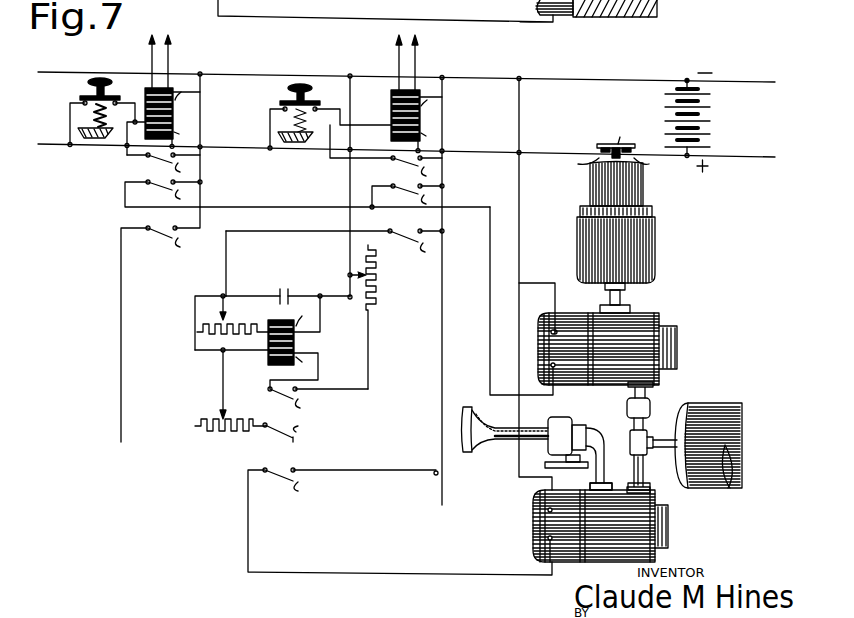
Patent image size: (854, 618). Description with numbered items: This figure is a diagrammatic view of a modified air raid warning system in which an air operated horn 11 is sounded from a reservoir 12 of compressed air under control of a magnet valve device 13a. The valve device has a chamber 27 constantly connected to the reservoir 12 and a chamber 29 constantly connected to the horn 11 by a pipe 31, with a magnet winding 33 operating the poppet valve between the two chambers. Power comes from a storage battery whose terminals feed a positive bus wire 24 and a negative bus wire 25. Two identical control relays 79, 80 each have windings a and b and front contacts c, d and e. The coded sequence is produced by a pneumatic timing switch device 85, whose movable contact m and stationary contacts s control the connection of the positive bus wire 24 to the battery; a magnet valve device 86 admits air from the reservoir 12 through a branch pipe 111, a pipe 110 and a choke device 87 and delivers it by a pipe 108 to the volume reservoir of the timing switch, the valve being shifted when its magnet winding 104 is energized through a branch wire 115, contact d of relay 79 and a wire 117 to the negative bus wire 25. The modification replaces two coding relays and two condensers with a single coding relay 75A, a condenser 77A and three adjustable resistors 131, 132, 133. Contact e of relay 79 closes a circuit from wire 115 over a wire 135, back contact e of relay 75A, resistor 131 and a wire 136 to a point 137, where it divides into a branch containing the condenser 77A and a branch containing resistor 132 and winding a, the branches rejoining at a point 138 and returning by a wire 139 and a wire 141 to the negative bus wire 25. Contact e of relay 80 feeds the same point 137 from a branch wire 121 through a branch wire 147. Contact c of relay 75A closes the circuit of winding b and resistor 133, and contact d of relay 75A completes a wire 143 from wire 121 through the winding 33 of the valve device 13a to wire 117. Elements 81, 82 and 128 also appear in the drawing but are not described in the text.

The horn 11 is at (462, 432).
The reservoir 12 is at (693, 403).
The magnet valve device 13a is at (530, 520).
The positive bus wire 24 is at (207, 147).
The negative bus wire 25 is at (205, 74).
The chamber 27 is at (657, 17).
The chamber 29 is at (602, 17).
The pipe 31 is at (600, 478).
The magnet winding 33 is at (536, 539).
The coding relay 75A is at (279, 313).
The electrical condenser 77A is at (287, 290).
The control relay 79 is at (146, 100).
The control relay 80 is at (390, 110).
The pressure switch 81 is at (86, 84).
The pressure switch 82 is at (284, 90).
The pneumatic timing switch device 85 is at (588, 187).
The magnet valve device 86 is at (533, 330).
The choke device 87 is at (622, 396).
The magnet winding 104 is at (545, 343).
The pipe 108 is at (622, 298).
The pipe 110 is at (640, 468).
The branch pipe 111 is at (657, 436).
The branch wire 115 is at (200, 180).
The wire 117 is at (519, 115).
The branch wire 121 is at (442, 185).
The conductor 128 is at (378, 18).
The adjustable resistor 131 is at (207, 412).
The adjustable resistor 132 is at (215, 340).
The adjustable resistor 133 is at (374, 286).
The wire 135 is at (121, 275).
The wire 136 is at (196, 320).
The point 137 is at (226, 294).
The point 138 is at (320, 294).
The wire 139 is at (333, 297).
The wire 141 is at (350, 180).
The wire 143 is at (408, 472).
The branch wire 147 is at (288, 240).